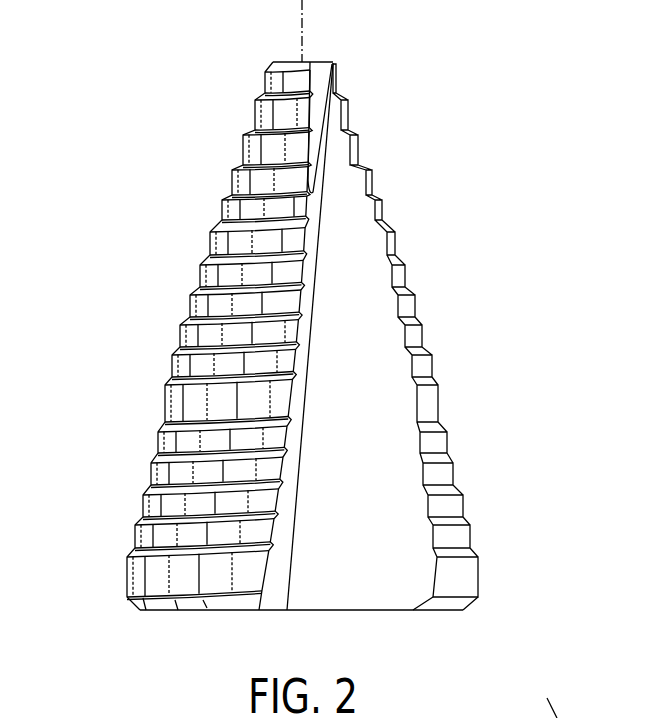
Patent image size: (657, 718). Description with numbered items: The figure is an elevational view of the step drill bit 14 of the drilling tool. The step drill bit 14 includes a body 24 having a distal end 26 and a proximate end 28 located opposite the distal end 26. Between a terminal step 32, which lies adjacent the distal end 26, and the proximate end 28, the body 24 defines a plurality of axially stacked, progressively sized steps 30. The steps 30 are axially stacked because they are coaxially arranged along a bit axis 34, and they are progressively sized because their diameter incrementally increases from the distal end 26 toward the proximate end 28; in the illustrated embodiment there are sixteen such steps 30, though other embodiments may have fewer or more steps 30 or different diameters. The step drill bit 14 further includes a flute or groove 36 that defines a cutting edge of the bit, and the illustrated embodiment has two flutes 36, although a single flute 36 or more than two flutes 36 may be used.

The step drill bit 14 is at (547, 167).
The body 24 is at (428, 365).
The distal end 26 is at (382, 65).
The proximate end 28 is at (421, 637).
The steps 30 is at (86, 54).
The terminal step 32 is at (338, 64).
The bit axis 34 is at (297, 50).
The flute 36 is at (352, 592).